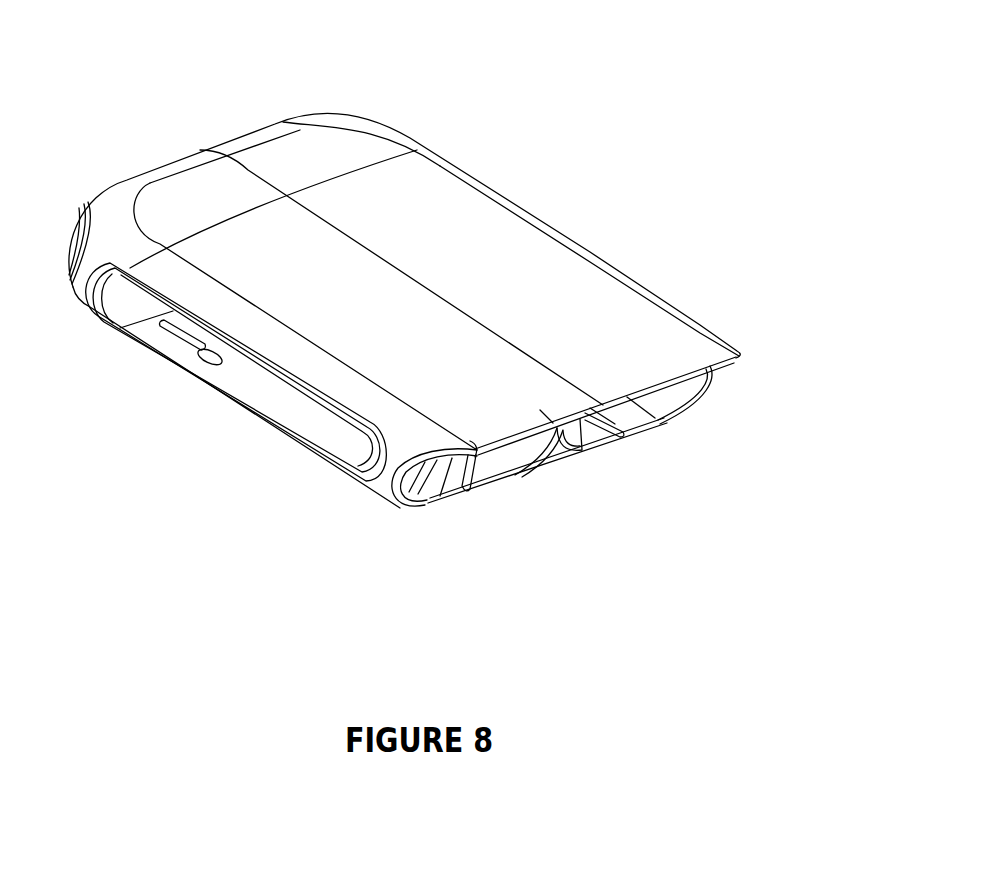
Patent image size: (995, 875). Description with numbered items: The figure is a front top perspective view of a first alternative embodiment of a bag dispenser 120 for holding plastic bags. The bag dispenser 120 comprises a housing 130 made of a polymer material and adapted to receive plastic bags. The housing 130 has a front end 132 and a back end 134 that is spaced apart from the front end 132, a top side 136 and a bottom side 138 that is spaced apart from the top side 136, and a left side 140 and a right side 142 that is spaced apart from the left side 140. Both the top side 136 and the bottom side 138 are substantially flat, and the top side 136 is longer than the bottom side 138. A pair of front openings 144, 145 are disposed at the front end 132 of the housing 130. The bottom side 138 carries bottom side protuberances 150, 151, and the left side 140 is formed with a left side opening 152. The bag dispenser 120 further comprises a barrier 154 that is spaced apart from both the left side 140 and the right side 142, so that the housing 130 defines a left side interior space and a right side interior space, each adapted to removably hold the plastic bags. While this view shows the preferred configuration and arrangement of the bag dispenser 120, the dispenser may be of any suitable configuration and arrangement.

The bag dispenser 120 is at (326, 100).
The housing 130 is at (513, 203).
The front end 132 is at (593, 465).
The back end 134 is at (200, 136).
The top side 136 is at (417, 187).
The bottom side 138 is at (527, 478).
The left side 140 is at (385, 485).
The right side 142 is at (714, 377).
The front opening 144 is at (485, 470).
The front opening 145 is at (670, 400).
The bottom side protuberance 150 is at (463, 488).
The bottom side protuberance 151 is at (623, 437).
The left side opening 152 is at (263, 390).
The barrier 154 is at (553, 455).